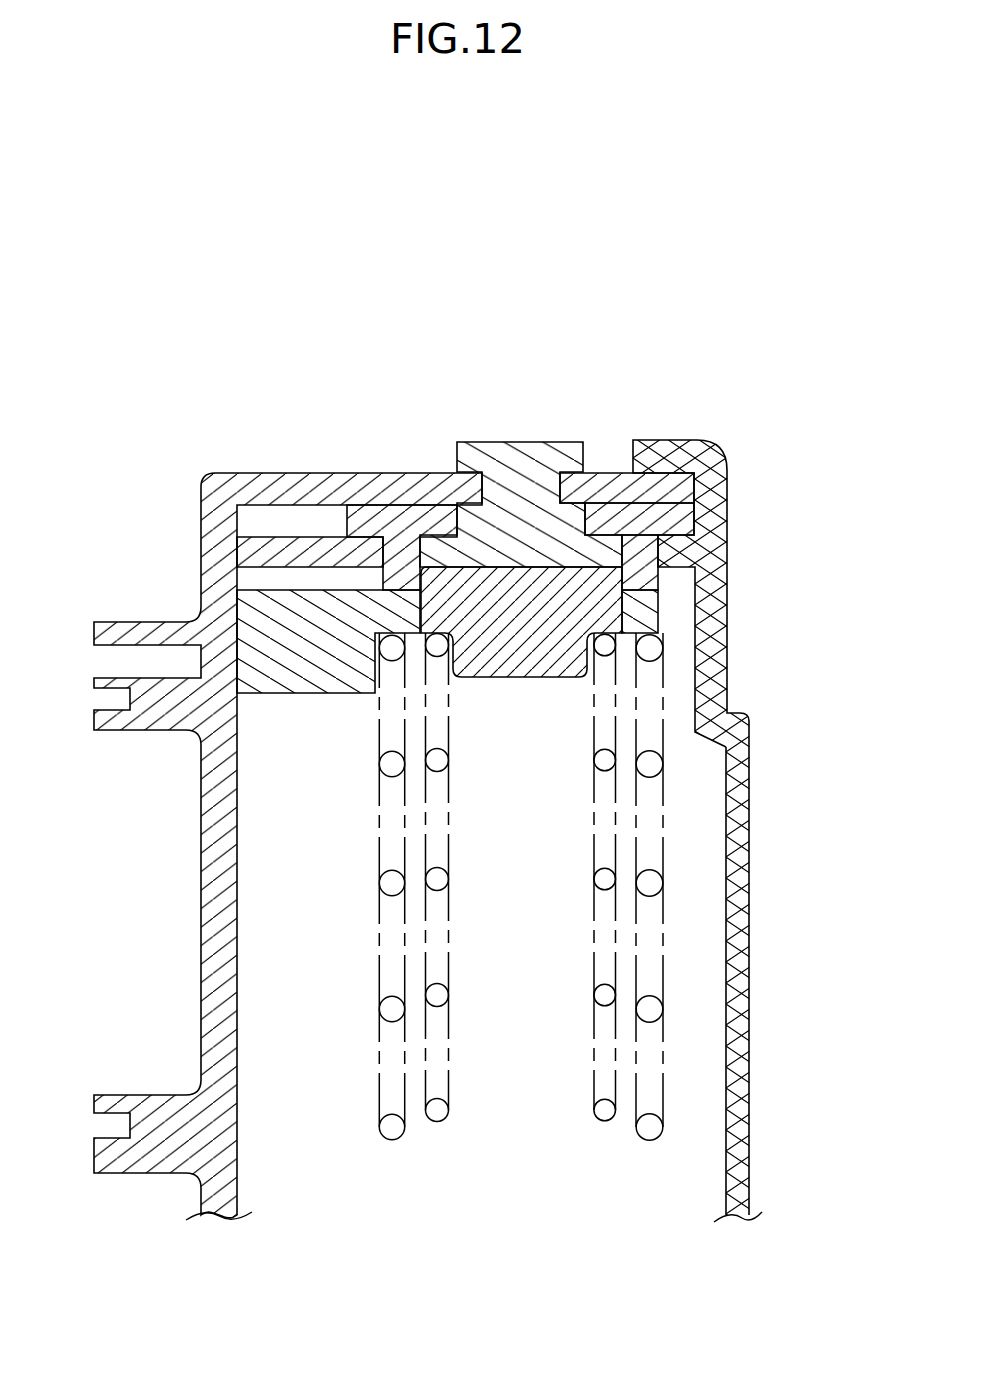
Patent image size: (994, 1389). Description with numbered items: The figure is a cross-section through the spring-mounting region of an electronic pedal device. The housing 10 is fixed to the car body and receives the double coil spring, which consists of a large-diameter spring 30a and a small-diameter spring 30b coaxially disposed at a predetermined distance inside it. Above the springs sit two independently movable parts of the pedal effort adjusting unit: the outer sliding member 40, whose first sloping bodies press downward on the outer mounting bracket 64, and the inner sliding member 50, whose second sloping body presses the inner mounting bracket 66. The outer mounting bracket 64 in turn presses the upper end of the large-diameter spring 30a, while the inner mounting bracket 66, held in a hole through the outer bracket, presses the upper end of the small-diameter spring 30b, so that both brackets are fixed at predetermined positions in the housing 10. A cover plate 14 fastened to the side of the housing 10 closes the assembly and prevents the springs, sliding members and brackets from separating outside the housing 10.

The housing 10 is at (200, 928).
The cover plate 14 is at (738, 1046).
The large-diameter spring 30a is at (651, 885).
The small-diameter spring 30b is at (606, 994).
The outer sliding member 40 is at (673, 526).
The inner sliding member 50 is at (508, 443).
The outer mounting bracket 64 is at (281, 618).
The inner mounting bracket 66 is at (412, 575).